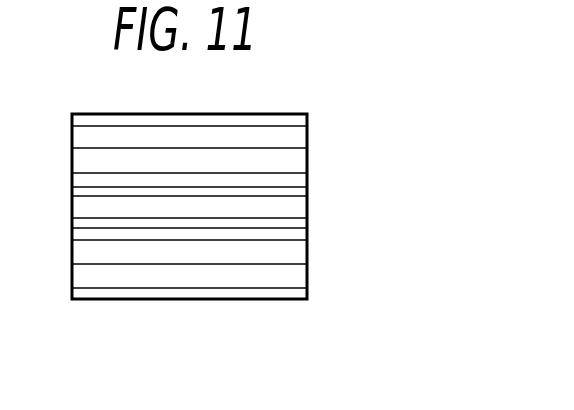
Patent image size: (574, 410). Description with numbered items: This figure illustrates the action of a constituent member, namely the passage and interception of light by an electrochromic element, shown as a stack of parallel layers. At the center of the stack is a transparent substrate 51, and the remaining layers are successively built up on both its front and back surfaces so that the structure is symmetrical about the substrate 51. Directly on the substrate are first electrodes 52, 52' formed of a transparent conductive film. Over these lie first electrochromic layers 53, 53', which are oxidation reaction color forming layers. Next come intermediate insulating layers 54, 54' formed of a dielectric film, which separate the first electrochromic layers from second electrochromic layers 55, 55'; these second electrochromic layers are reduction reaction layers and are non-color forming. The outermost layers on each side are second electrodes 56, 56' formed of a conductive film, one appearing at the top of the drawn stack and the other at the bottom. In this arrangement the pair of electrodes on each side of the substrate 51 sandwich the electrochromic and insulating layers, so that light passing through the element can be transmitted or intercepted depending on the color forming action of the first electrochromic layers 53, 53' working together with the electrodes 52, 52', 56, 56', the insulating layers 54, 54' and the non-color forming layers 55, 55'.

The transparent substrate 51 is at (302, 213).
The first electrode 52 is at (243, 202).
The first electrochromic layer 53 is at (224, 182).
The intermediate insulating layer 54 is at (243, 162).
The second electrochromic layer 55 is at (224, 135).
The second electrode 56 is at (189, 96).
The first electrode 52' is at (244, 238).
The first electrochromic layer 53' is at (225, 251).
The intermediate insulating layer 54' is at (243, 268).
The second electrochromic layer 55' is at (225, 291).
The second electrode 56' is at (189, 323).